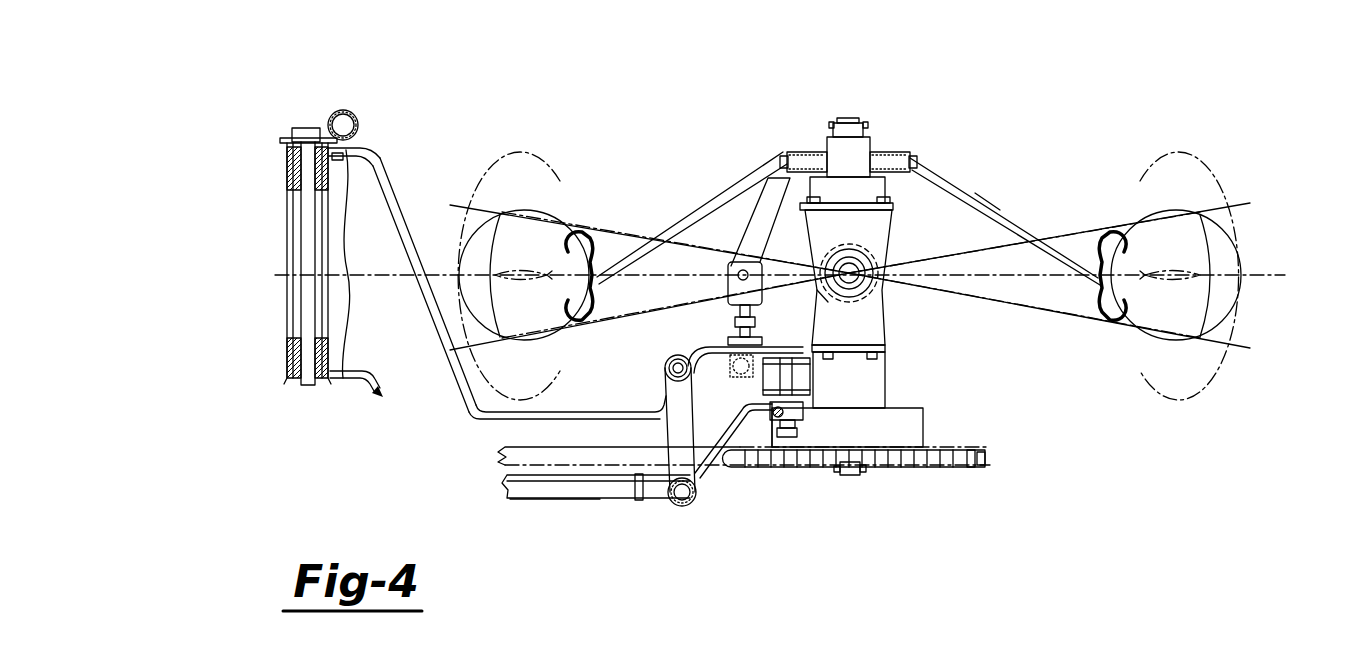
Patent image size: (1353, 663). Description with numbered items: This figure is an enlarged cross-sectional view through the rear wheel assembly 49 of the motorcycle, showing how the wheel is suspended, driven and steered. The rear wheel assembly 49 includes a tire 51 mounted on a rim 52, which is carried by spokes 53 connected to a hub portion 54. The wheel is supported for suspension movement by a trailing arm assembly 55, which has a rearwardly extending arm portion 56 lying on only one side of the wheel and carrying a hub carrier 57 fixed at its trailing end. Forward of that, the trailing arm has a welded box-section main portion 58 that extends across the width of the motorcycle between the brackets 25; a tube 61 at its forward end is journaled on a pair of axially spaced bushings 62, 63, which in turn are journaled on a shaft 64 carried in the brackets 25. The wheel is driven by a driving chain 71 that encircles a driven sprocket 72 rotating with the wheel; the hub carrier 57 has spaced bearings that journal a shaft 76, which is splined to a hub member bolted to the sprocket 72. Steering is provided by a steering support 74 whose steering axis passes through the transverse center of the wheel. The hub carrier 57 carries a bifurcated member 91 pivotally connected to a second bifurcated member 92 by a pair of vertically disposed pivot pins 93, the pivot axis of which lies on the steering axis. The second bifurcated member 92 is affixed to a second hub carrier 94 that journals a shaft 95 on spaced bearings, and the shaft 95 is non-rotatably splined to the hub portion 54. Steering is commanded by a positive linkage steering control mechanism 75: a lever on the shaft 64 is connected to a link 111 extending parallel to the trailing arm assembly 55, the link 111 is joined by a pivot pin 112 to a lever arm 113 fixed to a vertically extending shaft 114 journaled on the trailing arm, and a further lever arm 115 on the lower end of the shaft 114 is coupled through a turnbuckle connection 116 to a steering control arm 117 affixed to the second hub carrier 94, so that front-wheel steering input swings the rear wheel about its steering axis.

The brackets 25 is at (290, 130).
The rear wheel assembly 49 is at (964, 171).
The tire 51 is at (1238, 233).
The rim 52 is at (575, 235).
The spokes 53 is at (700, 215).
The hub portion 54 is at (912, 150).
The trailing arm assembly 55 is at (382, 169).
The rearwardly extending arm portion 56 is at (553, 411).
The hub carrier 57 is at (887, 373).
The main portion 58 is at (368, 150).
The tube 61 is at (287, 217).
The bushing 62 is at (287, 157).
The bushing 63 is at (287, 347).
The shaft 64 is at (299, 199).
The driving chain 71 is at (498, 447).
The driven sprocket 72 is at (947, 468).
The steering support 74 is at (906, 304).
The positive linkage steering control mechanism 75 is at (520, 512).
The shaft 76 is at (850, 476).
The bifurcated member 91 is at (878, 328).
The second bifurcated member 92 is at (880, 234).
The pivot pins 93 is at (820, 296).
The second hub carrier 94 is at (977, 193).
The shaft 95 is at (858, 152).
The link 111 is at (548, 498).
The pivot pin 112 is at (688, 508).
The lever arm 113 is at (653, 397).
The vertically extending shaft 114 is at (662, 358).
The lever arm 115 is at (705, 381).
The turnbuckle connection 116 is at (724, 323).
The steering control arm 117 is at (762, 233).